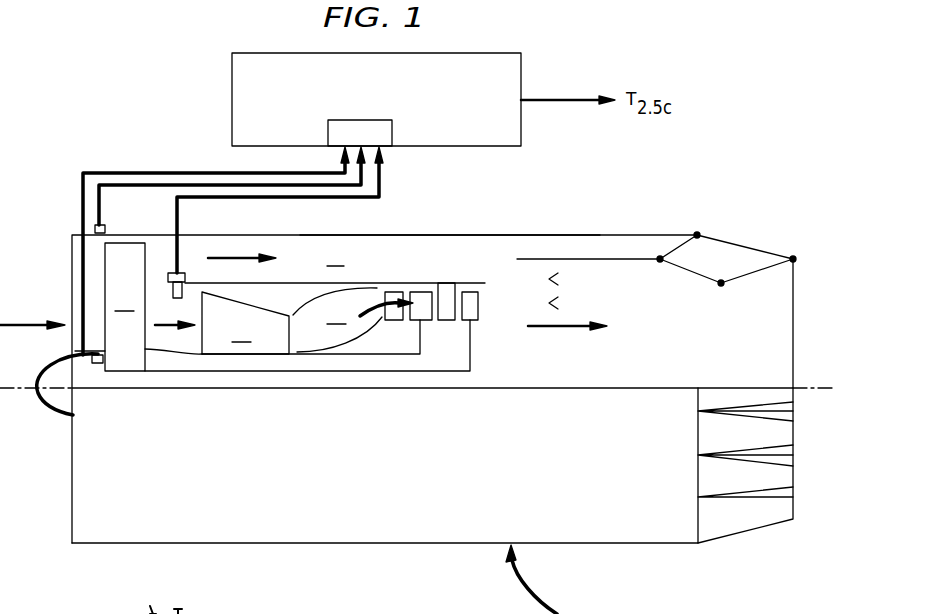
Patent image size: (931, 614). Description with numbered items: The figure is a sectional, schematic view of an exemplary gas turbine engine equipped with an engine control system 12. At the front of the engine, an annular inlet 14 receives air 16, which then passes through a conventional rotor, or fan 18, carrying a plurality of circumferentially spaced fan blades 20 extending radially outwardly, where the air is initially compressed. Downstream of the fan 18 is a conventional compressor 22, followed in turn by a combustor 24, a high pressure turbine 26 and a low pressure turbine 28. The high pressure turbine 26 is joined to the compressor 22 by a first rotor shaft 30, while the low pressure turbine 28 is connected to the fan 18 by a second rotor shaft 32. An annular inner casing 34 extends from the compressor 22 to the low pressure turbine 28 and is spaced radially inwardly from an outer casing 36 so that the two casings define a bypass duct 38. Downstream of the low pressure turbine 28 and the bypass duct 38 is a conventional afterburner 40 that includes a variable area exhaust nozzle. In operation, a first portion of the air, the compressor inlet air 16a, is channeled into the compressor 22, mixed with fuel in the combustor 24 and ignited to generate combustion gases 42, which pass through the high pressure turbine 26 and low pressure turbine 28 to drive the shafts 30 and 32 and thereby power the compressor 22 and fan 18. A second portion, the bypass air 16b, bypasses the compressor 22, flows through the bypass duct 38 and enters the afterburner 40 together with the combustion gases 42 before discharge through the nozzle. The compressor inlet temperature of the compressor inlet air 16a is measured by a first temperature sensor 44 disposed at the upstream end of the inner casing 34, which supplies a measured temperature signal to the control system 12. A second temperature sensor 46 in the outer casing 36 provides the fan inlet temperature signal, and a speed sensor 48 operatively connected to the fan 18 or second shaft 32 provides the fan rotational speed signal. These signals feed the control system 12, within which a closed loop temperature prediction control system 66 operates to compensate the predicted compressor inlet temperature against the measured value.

The engine control system 12 is at (232, 84).
The annular inlet 14 is at (75, 243).
The air 16 is at (27, 322).
The compressor inlet air 16a is at (164, 330).
The bypass air 16b is at (254, 255).
The fan 18 is at (123, 385).
The fan blades 20 is at (110, 307).
The compressor 22 is at (245, 323).
The combustor 24 is at (337, 320).
The high pressure turbine 26 is at (422, 292).
The low pressure turbine 28 is at (469, 292).
The first rotor shaft 30 is at (340, 371).
The second rotor shaft 32 is at (400, 371).
The annular inner casing 34 is at (358, 283).
The outer casing 36 is at (440, 236).
The bypass duct 38 is at (335, 254).
The afterburner 40 is at (681, 226).
The combustion gases 42 is at (556, 332).
The first temperature sensor 44 is at (168, 278).
The second temperature sensor 46 is at (105, 228).
The speed sensor 48 is at (376, 317).
The temperature prediction control system 66 is at (390, 146).